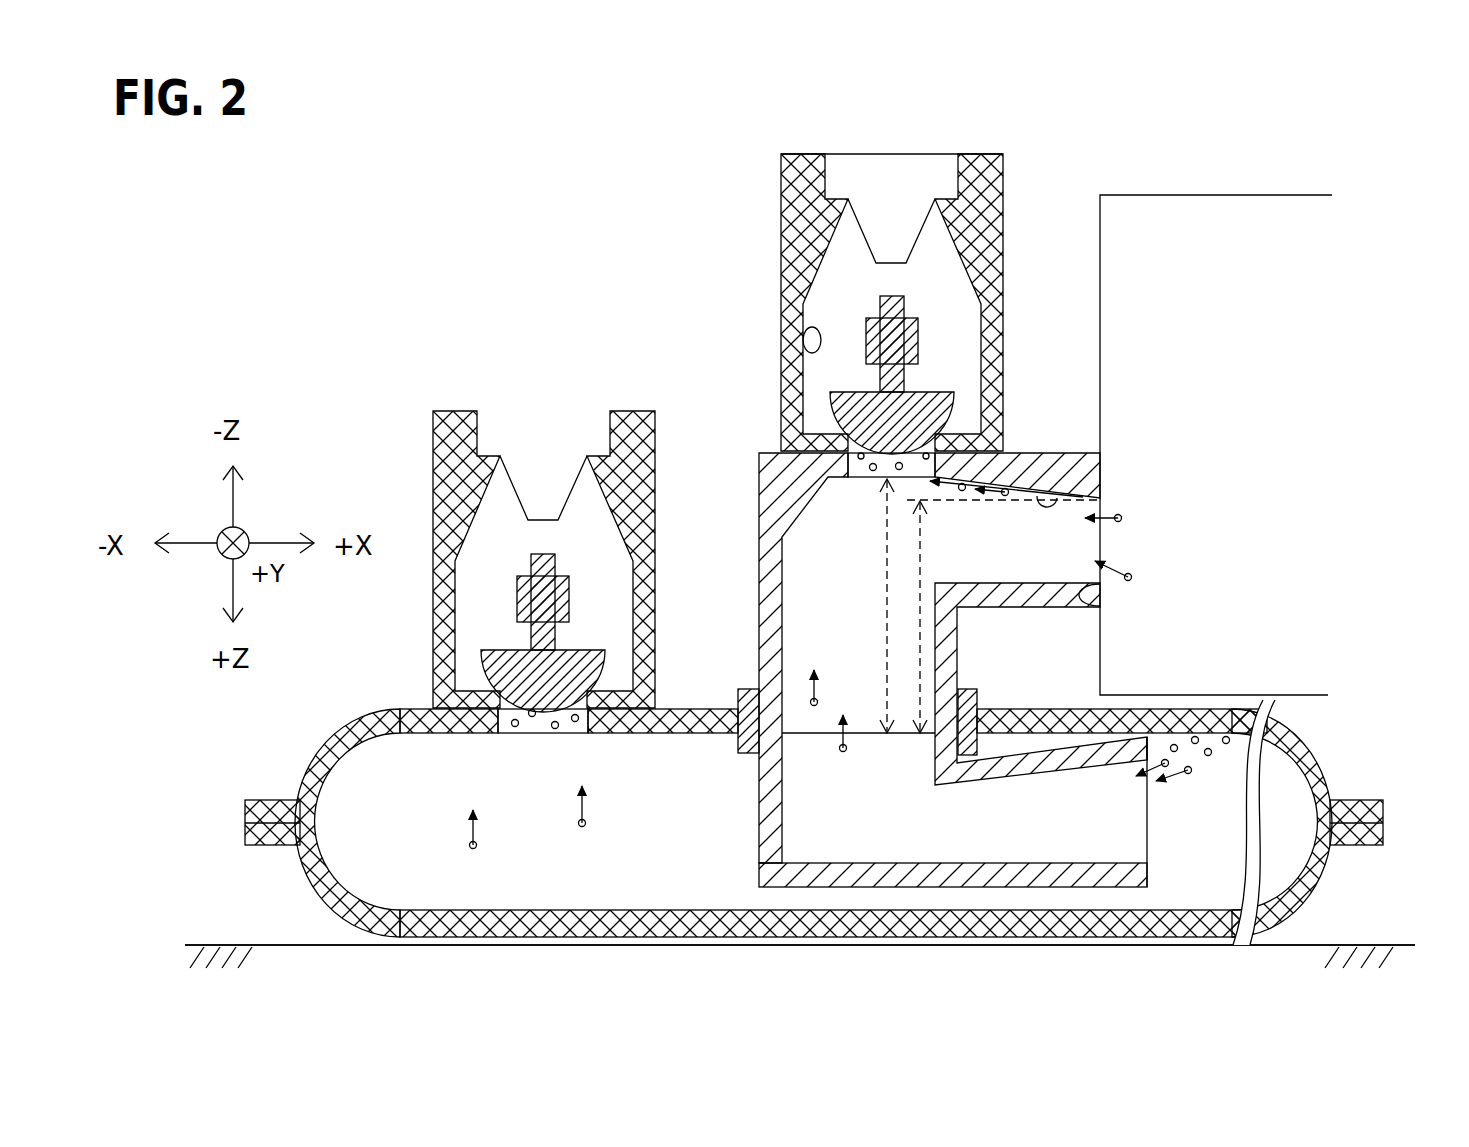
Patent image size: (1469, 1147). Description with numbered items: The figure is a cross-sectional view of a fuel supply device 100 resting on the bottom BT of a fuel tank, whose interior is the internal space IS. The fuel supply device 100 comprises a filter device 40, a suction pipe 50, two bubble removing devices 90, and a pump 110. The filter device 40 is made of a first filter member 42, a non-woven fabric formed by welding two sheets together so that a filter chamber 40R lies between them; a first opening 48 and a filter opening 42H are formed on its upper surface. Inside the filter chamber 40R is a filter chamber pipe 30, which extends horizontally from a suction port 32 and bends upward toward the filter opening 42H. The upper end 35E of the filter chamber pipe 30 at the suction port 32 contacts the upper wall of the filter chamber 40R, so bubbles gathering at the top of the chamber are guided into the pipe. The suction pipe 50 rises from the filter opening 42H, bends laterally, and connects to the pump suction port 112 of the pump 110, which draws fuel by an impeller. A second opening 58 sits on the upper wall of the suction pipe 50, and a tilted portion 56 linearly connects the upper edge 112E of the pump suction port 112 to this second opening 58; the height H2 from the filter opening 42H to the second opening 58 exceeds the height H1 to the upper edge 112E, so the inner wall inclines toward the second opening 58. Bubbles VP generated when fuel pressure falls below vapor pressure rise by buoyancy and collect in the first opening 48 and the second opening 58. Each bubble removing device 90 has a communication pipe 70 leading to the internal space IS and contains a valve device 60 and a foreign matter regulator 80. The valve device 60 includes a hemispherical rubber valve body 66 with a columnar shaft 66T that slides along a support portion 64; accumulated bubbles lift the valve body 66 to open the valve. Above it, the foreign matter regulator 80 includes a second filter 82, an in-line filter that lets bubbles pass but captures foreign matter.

The fuel supply device 100 is at (310, 248).
The internal space IS is at (431, 184).
The bubble removing device 90 is at (410, 437).
The second filter 82 is at (913, 141).
The foreign matter regulator 80 is at (935, 153).
The pump 110 is at (1215, 195).
The communication pipe 70 is at (795, 353).
The shaft 66T is at (886, 297).
The valve device 60 is at (775, 491).
The support portion 64 is at (918, 362).
The valve body 66 is at (950, 408).
The suction pipe 50 is at (937, 653).
The tilted portion 56 is at (1067, 497).
The second opening 58 is at (853, 480).
The upper edge of the pump suction port 112E is at (1100, 503).
The pump suction port 112 is at (1085, 623).
The filter opening 42H is at (957, 695).
The upper end 35E is at (1148, 737).
The suction port 32 is at (1135, 835).
The filter chamber pipe 30 is at (747, 946).
The bottom BT is at (1398, 945).
The filter device 40 is at (796, 802).
The first filter member 42 is at (398, 705).
The filter chamber 40R is at (405, 831).
The first opening 48 is at (513, 734).
The bubbles VP is at (473, 849).
The height H1 is at (937, 617).
The height H2 is at (869, 606).